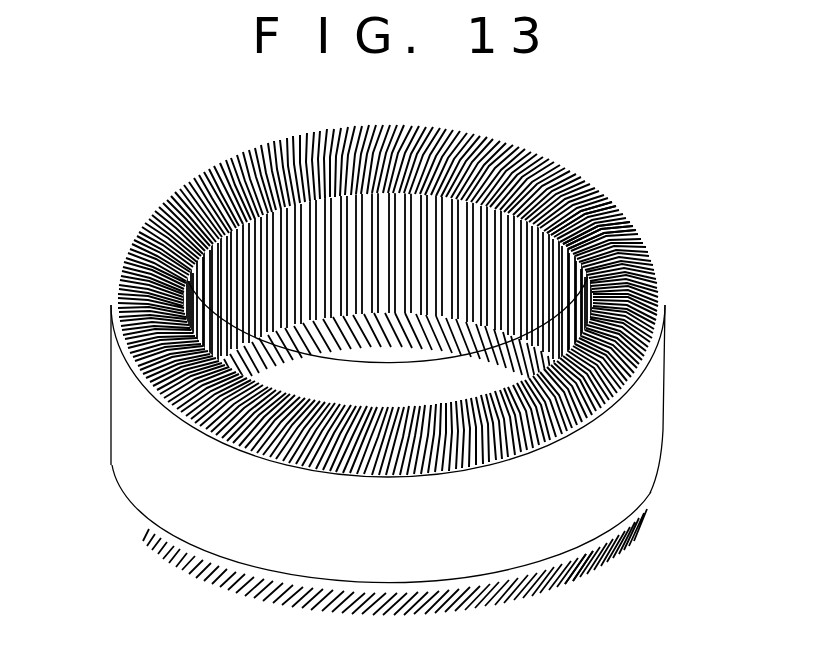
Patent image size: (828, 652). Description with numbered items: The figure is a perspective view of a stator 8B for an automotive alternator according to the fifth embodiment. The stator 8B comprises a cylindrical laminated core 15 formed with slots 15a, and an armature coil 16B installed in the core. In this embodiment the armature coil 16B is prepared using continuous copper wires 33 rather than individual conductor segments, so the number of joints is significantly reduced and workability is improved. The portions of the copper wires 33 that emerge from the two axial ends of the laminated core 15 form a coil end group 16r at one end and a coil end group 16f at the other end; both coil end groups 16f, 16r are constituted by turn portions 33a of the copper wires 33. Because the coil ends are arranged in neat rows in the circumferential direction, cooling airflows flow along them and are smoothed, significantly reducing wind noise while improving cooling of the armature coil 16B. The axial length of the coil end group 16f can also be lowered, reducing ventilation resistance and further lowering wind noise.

The stator 8B is at (98, 183).
The laminated core 15 is at (667, 353).
The slots 15a is at (608, 411).
The armature coil 16B is at (651, 279).
The coil end group 16r is at (128, 252).
The coil end group 16f is at (138, 536).
The continuous copper wires 33 is at (640, 226).
The turn portions 33a is at (603, 210).